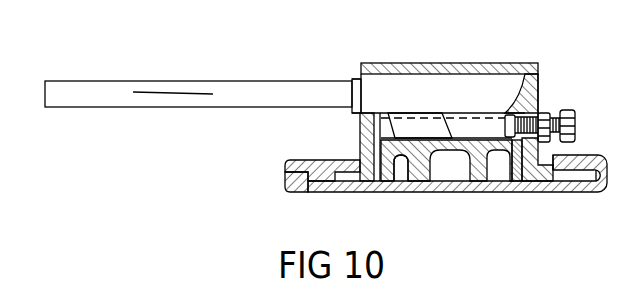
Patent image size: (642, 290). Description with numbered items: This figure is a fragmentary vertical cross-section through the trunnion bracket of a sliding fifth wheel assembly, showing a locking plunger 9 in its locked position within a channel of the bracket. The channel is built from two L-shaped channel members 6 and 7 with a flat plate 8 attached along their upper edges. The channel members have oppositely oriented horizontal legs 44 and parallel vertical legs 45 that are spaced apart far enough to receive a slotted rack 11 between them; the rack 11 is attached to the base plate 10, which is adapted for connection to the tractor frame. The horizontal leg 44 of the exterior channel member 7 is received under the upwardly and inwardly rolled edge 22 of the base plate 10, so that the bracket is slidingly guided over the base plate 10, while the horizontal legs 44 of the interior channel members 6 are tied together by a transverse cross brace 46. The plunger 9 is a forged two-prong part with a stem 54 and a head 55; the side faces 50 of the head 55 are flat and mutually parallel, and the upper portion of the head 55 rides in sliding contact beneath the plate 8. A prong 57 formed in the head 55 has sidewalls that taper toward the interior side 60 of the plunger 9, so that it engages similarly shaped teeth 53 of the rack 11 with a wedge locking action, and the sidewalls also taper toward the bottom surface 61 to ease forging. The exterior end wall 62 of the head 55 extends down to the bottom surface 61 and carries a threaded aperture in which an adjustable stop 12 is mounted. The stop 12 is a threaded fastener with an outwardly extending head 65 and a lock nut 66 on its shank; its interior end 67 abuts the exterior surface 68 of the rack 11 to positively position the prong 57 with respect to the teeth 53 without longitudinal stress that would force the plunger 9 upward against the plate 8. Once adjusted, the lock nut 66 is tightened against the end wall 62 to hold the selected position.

The stem 54 is at (123, 88).
The interior side 60 is at (352, 93).
The plunger 9 is at (352, 82).
The flat plate 8 is at (480, 64).
The side face 50 is at (420, 80).
The head 55 is at (512, 82).
The exterior end wall 62 is at (540, 85).
The teeth 53 is at (413, 127).
The prong 57 is at (425, 127).
The interior end 67 is at (505, 118).
The lock nut 66 is at (549, 112).
The adjustable stop 12 is at (571, 109).
The head 65 is at (576, 121).
The L-shaped channel member 6 is at (360, 130).
The vertical leg 45 is at (360, 150).
The transverse cross brace 46 is at (293, 160).
The horizontal leg 44 is at (318, 192).
The rolled edge 22 is at (615, 172).
The L-shaped channel member 7 is at (540, 150).
The exterior surface 68 is at (514, 160).
The base plate 10 is at (433, 185).
The slotted rack 11 is at (400, 167).
The bottom surface 61 is at (380, 183).